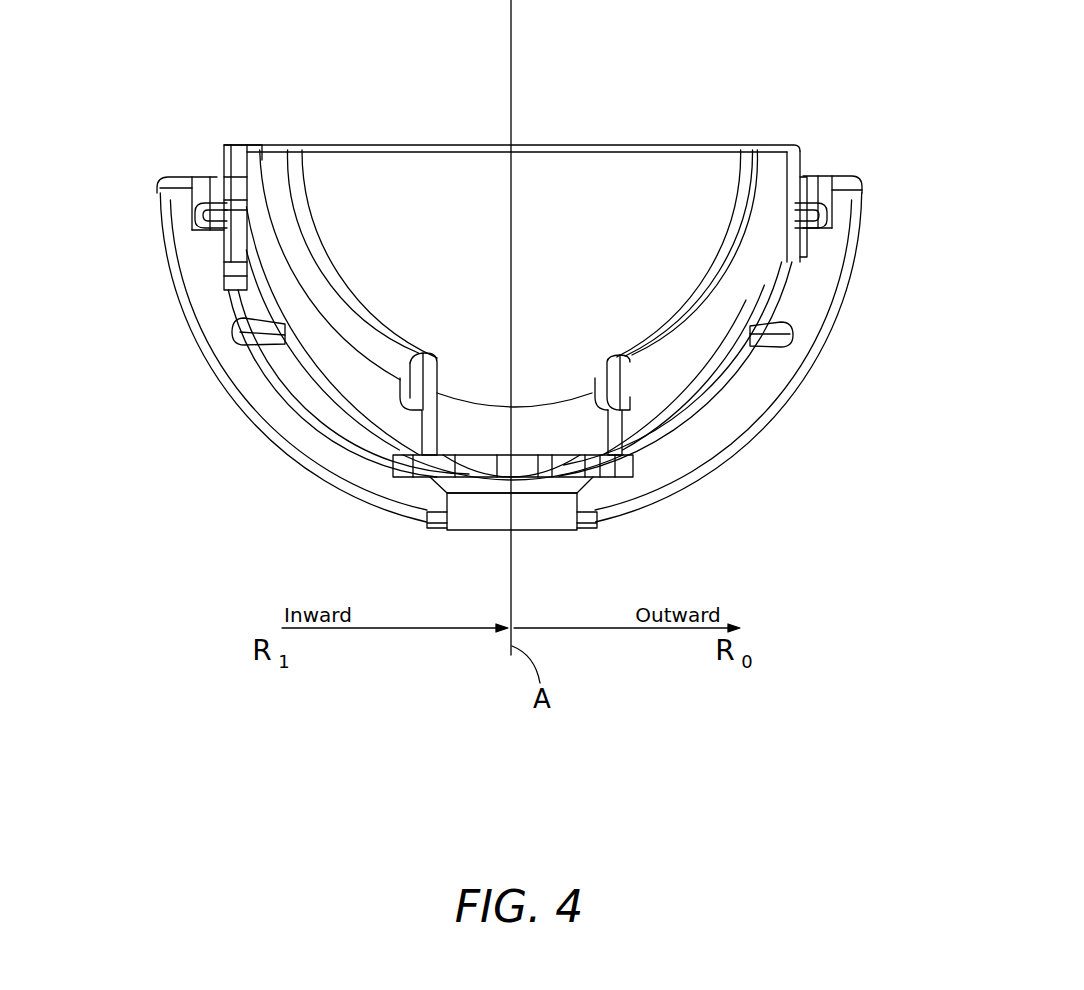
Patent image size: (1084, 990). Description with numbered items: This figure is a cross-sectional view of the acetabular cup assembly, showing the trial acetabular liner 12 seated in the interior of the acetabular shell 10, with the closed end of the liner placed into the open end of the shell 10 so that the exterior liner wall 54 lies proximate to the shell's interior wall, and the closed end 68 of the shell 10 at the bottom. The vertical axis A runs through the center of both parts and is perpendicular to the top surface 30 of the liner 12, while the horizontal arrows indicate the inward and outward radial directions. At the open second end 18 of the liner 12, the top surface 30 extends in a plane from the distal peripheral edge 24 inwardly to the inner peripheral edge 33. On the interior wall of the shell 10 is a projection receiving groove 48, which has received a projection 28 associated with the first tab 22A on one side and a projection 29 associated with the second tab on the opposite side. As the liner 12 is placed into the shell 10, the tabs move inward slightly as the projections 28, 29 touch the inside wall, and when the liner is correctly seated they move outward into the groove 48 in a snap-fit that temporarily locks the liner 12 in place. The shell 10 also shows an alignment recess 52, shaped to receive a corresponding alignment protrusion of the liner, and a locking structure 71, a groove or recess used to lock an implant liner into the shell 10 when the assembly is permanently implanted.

The acetabular shell 10 is at (648, 511).
The trial acetabular liner 12 is at (626, 140).
The open second end 18 is at (576, 122).
The first tab 22A is at (258, 150).
The distal peripheral edge 24 is at (801, 143).
The projection 28 is at (203, 221).
The projection 29 is at (236, 205).
The top surface 30 is at (780, 143).
The inner peripheral edge 33 is at (285, 145).
The projection receiving groove 48 is at (206, 214).
The alignment recess 52 is at (828, 214).
The exterior liner wall 54 is at (343, 343).
The closed end 68 is at (429, 538).
The locking structure 71 is at (233, 325).